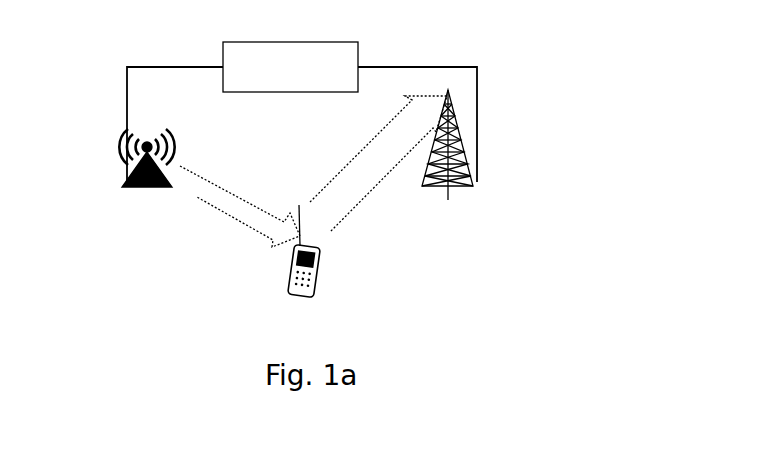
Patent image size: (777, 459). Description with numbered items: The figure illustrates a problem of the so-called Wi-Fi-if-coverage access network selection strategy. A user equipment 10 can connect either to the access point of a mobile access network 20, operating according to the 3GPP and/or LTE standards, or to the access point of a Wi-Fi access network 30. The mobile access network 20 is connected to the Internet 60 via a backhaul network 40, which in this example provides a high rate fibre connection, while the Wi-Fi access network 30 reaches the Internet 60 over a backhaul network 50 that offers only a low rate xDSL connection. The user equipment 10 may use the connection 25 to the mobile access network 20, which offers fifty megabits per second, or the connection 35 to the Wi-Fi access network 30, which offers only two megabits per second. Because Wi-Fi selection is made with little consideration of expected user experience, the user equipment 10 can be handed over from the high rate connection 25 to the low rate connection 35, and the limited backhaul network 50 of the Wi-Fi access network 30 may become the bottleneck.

The user equipment 10 is at (288, 288).
The mobile access network 20 is at (448, 200).
The connection 25 is at (368, 208).
The Wi-Fi access network 30 is at (117, 173).
The connection 35 is at (203, 210).
The backhaul network 40 is at (460, 67).
The backhaul network 50 is at (126, 96).
The Internet 60 is at (343, 43).